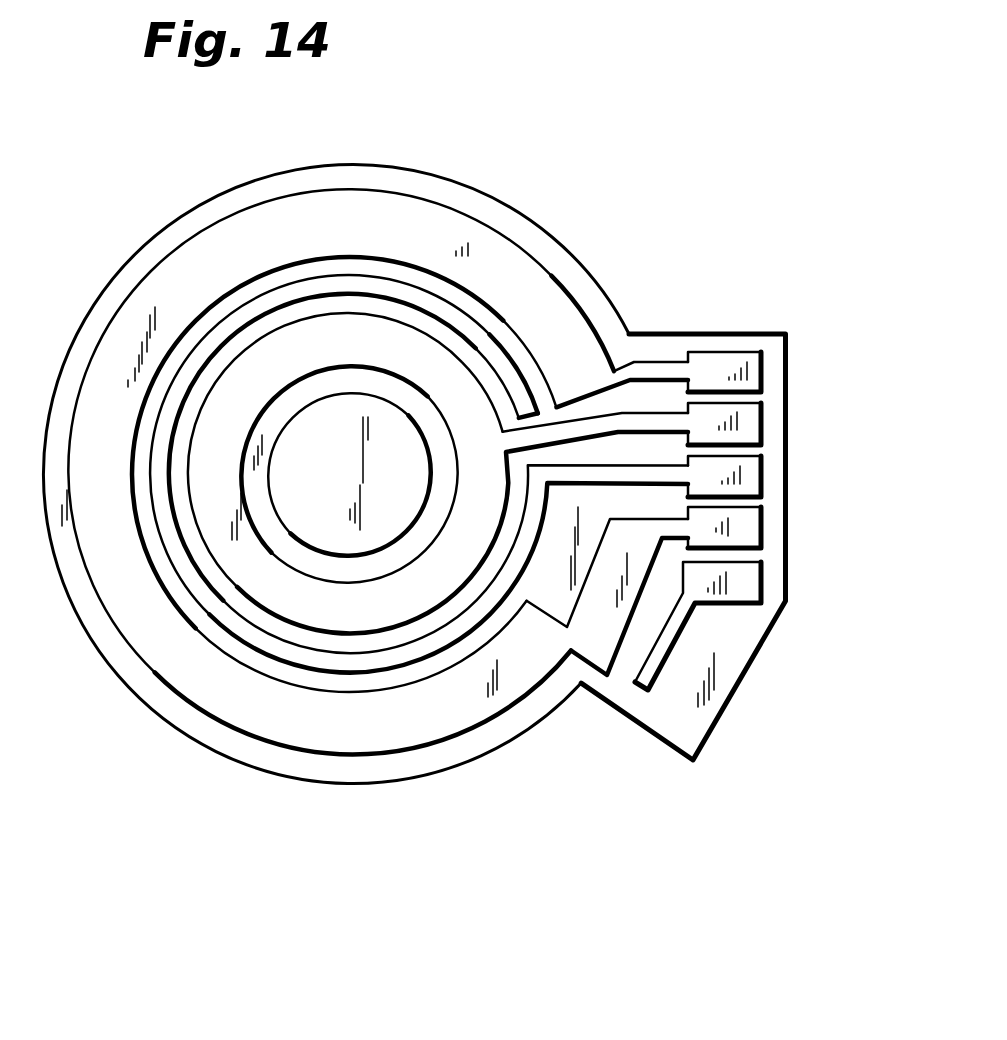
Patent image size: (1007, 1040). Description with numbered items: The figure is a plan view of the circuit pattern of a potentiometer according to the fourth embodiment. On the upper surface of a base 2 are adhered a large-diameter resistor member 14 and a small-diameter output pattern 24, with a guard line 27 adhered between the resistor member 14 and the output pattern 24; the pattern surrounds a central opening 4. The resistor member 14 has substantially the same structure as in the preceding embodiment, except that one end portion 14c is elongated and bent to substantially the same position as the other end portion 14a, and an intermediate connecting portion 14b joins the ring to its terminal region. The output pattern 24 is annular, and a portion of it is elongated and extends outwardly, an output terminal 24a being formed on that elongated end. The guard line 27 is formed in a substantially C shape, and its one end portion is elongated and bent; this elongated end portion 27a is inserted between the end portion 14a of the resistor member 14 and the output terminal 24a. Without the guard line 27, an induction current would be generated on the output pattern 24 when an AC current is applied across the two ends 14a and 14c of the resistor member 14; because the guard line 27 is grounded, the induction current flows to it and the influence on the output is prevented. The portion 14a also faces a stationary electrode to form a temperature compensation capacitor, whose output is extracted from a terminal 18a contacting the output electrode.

The base 2 is at (507, 723).
The center hole 4 is at (283, 532).
The resistor member 14 is at (391, 735).
The end portion of the resistor member 14a is at (745, 532).
The connecting portion of electrode 14 14b is at (592, 645).
The end portion of the resistor member 14c is at (750, 368).
The terminal 18a is at (745, 585).
The output pattern 24 is at (462, 375).
The output terminal 24a is at (748, 425).
The guard line 27 is at (293, 655).
The elongated end portion of the guard line 27a is at (748, 477).